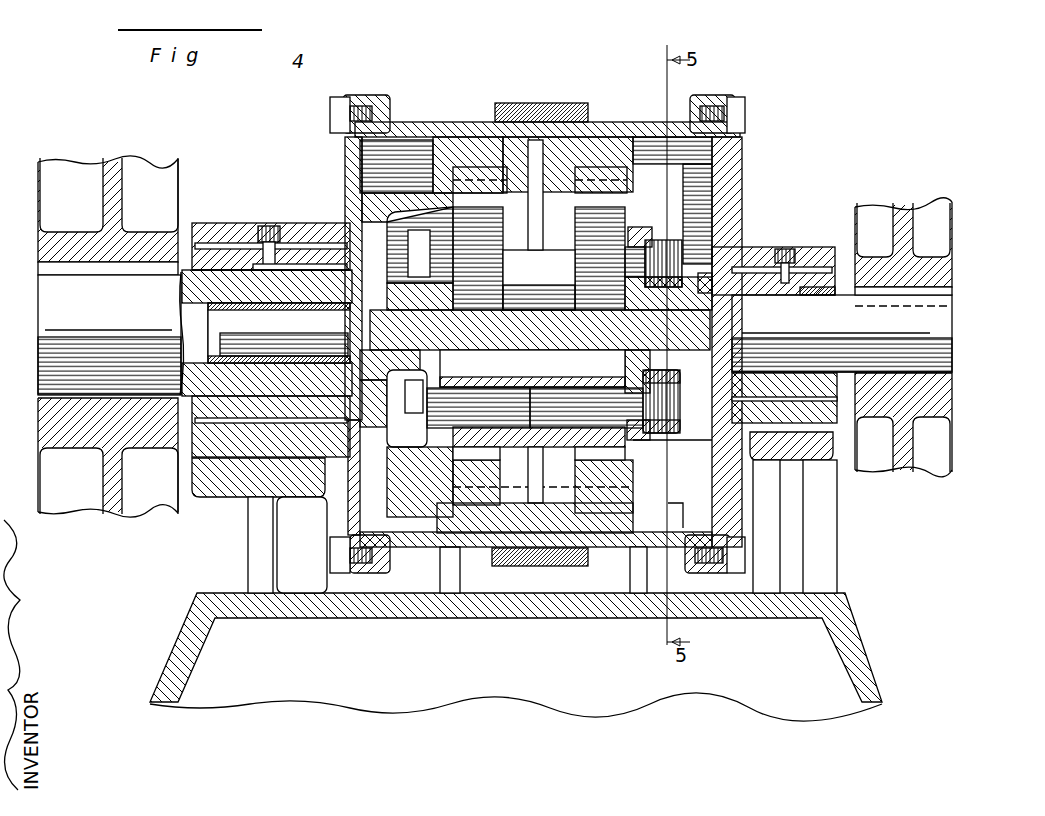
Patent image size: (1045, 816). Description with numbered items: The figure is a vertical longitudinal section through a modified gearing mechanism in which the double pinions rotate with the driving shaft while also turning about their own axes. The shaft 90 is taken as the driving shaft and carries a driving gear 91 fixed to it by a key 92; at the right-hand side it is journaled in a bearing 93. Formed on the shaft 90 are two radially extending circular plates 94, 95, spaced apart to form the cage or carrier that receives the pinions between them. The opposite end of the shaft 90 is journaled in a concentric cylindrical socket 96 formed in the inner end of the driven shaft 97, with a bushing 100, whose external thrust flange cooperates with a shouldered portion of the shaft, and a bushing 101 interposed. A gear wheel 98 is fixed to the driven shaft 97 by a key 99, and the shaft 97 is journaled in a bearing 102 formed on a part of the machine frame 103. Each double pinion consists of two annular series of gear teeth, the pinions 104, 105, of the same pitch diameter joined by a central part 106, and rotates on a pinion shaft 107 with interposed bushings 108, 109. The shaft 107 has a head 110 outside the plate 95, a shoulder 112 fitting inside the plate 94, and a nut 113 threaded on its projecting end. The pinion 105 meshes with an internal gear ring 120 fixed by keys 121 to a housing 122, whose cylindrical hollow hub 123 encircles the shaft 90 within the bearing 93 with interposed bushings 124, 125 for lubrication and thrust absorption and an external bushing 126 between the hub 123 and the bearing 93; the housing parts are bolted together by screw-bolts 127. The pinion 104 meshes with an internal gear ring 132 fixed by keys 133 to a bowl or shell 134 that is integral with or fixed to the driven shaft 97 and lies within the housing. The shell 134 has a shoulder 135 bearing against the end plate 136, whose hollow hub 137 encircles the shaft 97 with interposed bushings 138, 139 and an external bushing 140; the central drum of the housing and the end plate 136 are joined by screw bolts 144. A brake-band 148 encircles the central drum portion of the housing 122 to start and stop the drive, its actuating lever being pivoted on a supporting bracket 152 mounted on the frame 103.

The driving shaft 90 is at (240, 320).
The driving gear 91 is at (952, 238).
The key 92 is at (945, 290).
The bearing 93 is at (820, 425).
The circular plate 94 is at (690, 205).
The circular plate 95 is at (428, 245).
The cylindrical socket 96 is at (213, 332).
The driven shaft 97 is at (52, 318).
The gear wheel 98 is at (50, 212).
The key 99 is at (45, 268).
The bushing 100 is at (360, 340).
The bushing 101 is at (250, 352).
The bearing 102 is at (260, 505).
The machine frame 103 is at (380, 618).
The pinion 104 is at (440, 265).
The pinion 105 is at (605, 230).
The central part 106 is at (545, 250).
The pinion shaft 107 is at (393, 193).
The bushing 108 is at (462, 385).
The bushing 109 is at (568, 385).
The head 110 is at (380, 440).
The shoulder 112 is at (640, 430).
The nut 113 is at (690, 240).
The internal gear ring 120 is at (692, 165).
The key 121 is at (587, 172).
The housing 122 is at (595, 122).
The hollow hub 123 is at (812, 295).
The bushing 124 is at (735, 285).
The bushing 125 is at (810, 285).
The external bushing 126 is at (825, 415).
The screw-bolt 127 is at (735, 98).
The internal gear ring 132 is at (480, 172).
The key 133 is at (478, 165).
The bowl or shell 134 is at (395, 195).
The shoulder 135 is at (323, 497).
The end plate 136 is at (352, 98).
The hollow hub 137 is at (282, 260).
The bushing 138 is at (202, 268).
The bushing 139 is at (316, 268).
The external bushing 140 is at (248, 268).
The screw bolt 144 is at (330, 110).
The brake-band 148 is at (545, 103).
The supporting bracket 152 is at (487, 580).